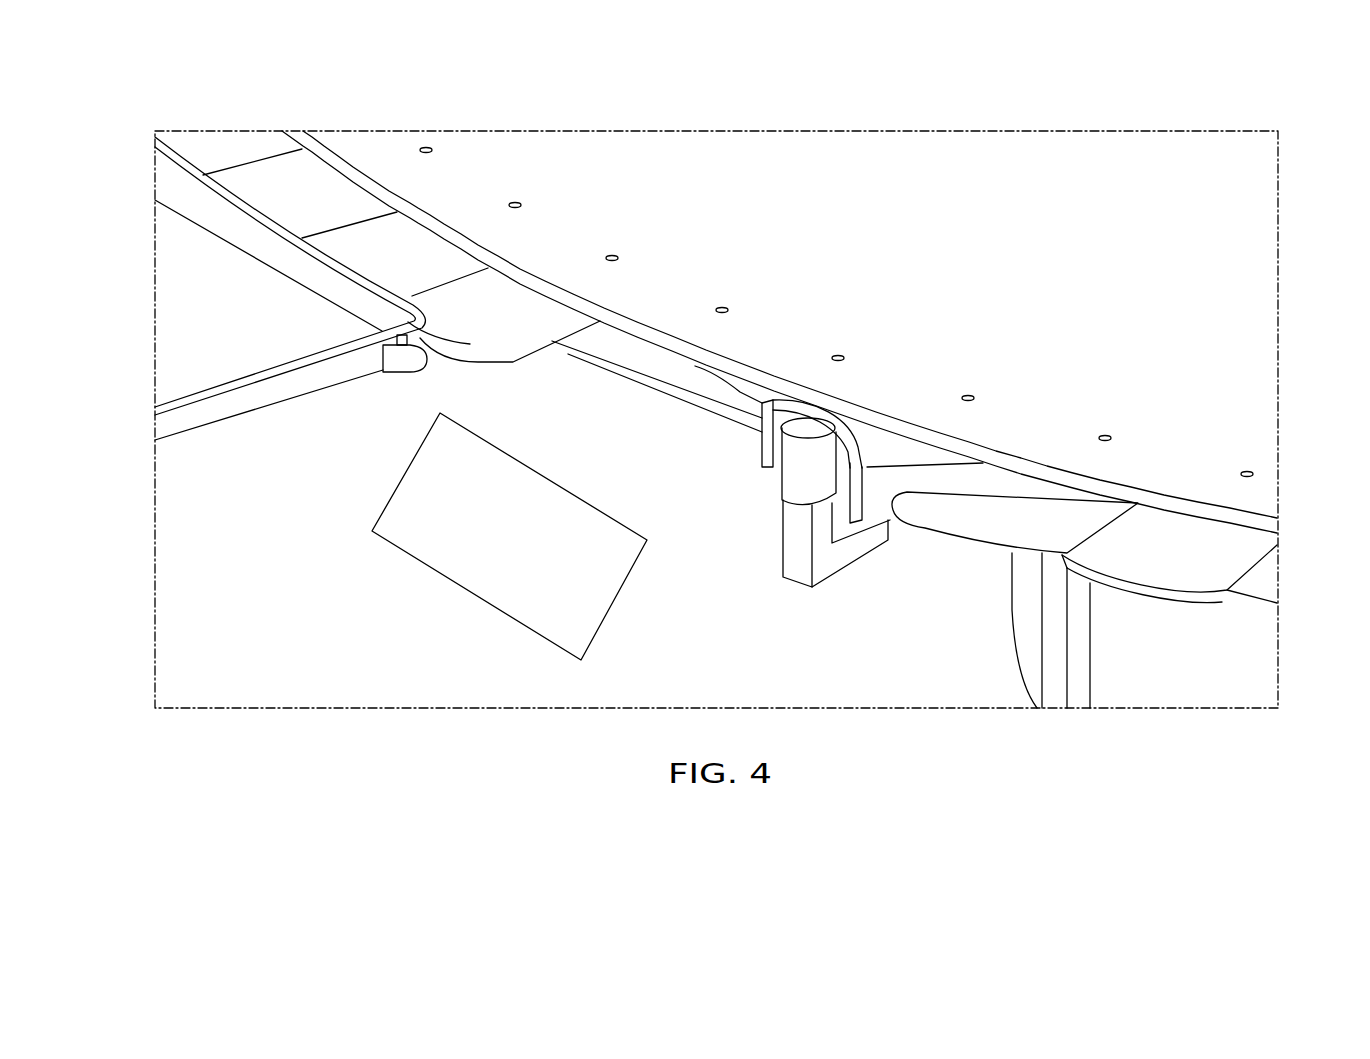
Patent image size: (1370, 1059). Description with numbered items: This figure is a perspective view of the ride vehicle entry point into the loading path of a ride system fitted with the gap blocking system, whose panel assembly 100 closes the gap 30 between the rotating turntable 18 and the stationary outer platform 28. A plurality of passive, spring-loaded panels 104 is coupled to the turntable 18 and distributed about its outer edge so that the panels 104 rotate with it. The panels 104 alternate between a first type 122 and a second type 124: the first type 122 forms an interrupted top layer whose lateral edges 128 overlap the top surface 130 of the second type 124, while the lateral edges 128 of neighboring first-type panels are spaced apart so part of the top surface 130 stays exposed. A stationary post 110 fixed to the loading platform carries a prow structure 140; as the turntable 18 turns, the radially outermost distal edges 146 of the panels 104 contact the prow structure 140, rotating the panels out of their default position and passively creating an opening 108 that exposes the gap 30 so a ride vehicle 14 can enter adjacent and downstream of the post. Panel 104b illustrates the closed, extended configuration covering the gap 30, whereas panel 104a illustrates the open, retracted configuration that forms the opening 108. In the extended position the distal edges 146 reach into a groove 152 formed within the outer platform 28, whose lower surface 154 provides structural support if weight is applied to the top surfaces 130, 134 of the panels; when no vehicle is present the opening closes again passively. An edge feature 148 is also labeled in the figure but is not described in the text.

The panel assembly 100 is at (319, 104).
The panel 104 is at (208, 147).
The open panel 104a is at (735, 388).
The closed panel 104b is at (463, 340).
The opening 108 is at (480, 412).
The stationary post 110 is at (790, 482).
The ride vehicle 14 is at (565, 437).
The turntable 18 is at (957, 199).
The outer platform 28 is at (192, 307).
The gap 30 is at (699, 297).
The first type of panel 122 is at (997, 528).
The second type of panel 124 is at (1183, 562).
The lateral edge 128 is at (930, 493).
The top surface 130 is at (1157, 542).
The top surface 134 is at (1010, 500).
The prow structure 140 is at (837, 480).
The radially outermost distal edge 146 is at (500, 362).
The edge 148 is at (628, 353).
The groove 152 is at (290, 394).
The lower surface 154 is at (385, 368).